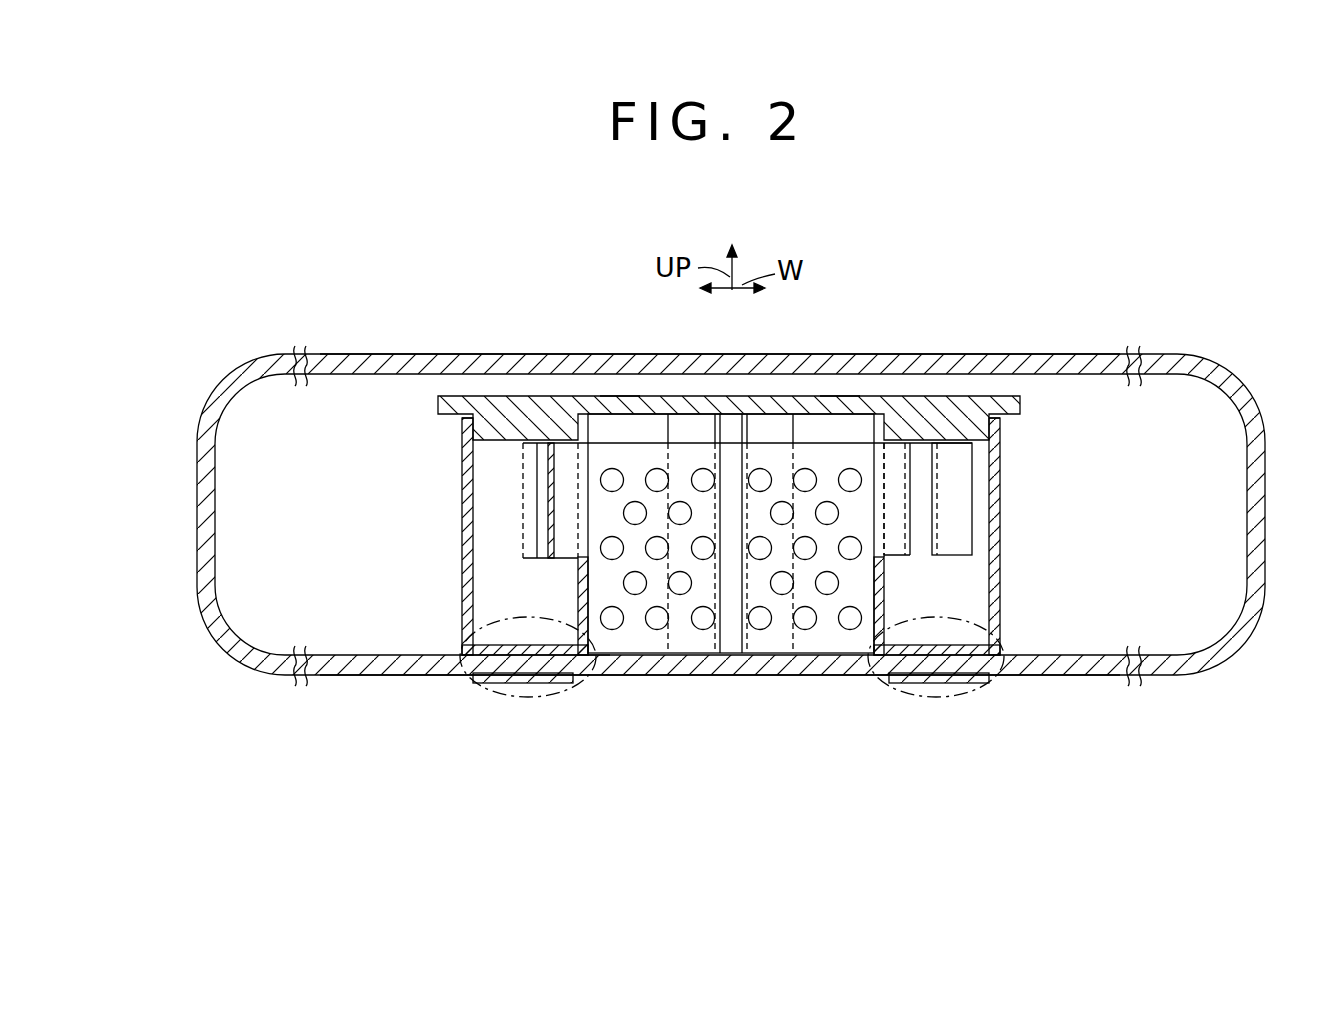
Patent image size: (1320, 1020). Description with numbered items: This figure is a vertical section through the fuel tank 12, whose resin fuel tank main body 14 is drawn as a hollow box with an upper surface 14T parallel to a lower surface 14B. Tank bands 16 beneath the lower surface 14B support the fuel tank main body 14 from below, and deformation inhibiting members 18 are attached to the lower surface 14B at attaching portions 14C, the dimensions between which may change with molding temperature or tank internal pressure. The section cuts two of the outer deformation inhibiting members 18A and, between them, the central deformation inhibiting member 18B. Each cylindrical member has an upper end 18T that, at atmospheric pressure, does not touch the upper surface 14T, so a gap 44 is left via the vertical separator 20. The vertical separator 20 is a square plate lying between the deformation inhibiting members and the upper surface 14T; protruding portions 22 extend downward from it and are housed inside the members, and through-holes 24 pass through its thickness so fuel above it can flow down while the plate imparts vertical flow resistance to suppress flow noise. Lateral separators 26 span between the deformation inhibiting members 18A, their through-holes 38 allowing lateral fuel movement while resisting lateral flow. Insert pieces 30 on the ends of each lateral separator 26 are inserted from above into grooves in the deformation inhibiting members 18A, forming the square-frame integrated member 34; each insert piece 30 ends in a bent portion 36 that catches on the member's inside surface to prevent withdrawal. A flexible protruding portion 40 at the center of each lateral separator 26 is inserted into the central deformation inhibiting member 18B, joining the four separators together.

The fuel tank 12 is at (1110, 256).
The fuel tank main body 14 is at (228, 655).
The upper surface 14T is at (1062, 352).
The lower surface 14B is at (1103, 676).
The attaching portions 14C is at (512, 695).
The tank band 16 is at (490, 684).
The deformation inhibiting member 18 is at (729, 577).
The deformation inhibiting member 18A is at (466, 572).
The deformation inhibiting member 18B is at (796, 640).
The upper end 18T is at (458, 412).
The vertical separator 20 is at (662, 403).
The protruding portion 22 is at (466, 436).
The through-hole 24 is at (622, 395).
The lateral separator 26 is at (608, 667).
The insert piece 30 is at (524, 498).
The integrated member 34 is at (448, 623).
The bent portion 36 is at (530, 562).
The through-hole 38 is at (651, 474).
The flexible protruding portion 40 is at (722, 655).
The gap 44 is at (448, 381).